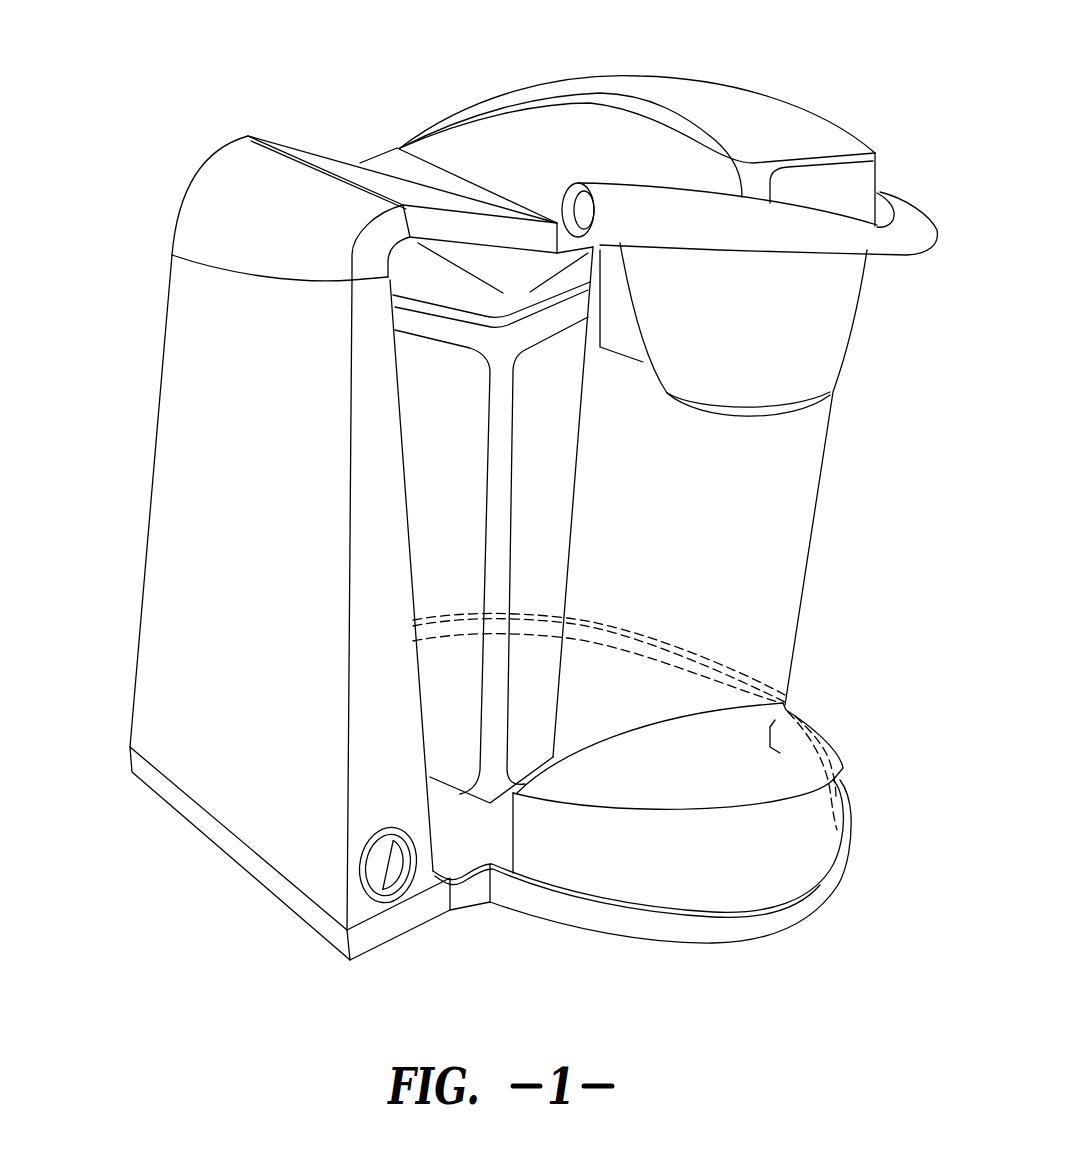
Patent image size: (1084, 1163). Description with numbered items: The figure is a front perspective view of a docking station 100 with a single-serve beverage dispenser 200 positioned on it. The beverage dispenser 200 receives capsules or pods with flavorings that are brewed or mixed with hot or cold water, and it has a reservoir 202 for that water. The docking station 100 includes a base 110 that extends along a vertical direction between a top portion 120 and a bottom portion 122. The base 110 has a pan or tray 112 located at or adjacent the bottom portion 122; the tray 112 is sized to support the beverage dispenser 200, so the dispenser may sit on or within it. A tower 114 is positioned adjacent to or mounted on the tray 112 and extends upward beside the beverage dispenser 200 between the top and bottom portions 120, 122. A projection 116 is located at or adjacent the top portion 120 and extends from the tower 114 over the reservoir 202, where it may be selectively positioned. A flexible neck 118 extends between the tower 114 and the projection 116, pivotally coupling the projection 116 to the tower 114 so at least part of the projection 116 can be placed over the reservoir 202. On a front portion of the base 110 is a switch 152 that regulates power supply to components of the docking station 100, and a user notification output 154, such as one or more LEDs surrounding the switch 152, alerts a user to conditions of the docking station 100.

The docking station 100 is at (199, 138).
The base 110 is at (157, 395).
The tray 112 is at (777, 907).
The tower 114 is at (173, 493).
The projection 116 is at (345, 176).
The flexible neck 118 is at (213, 218).
The top portion 120 is at (162, 257).
The bottom portion 122 is at (126, 777).
The switch 152 is at (381, 873).
The user notification output 154 is at (392, 834).
The beverage dispenser 200 is at (758, 80).
The reservoir 202 is at (560, 487).